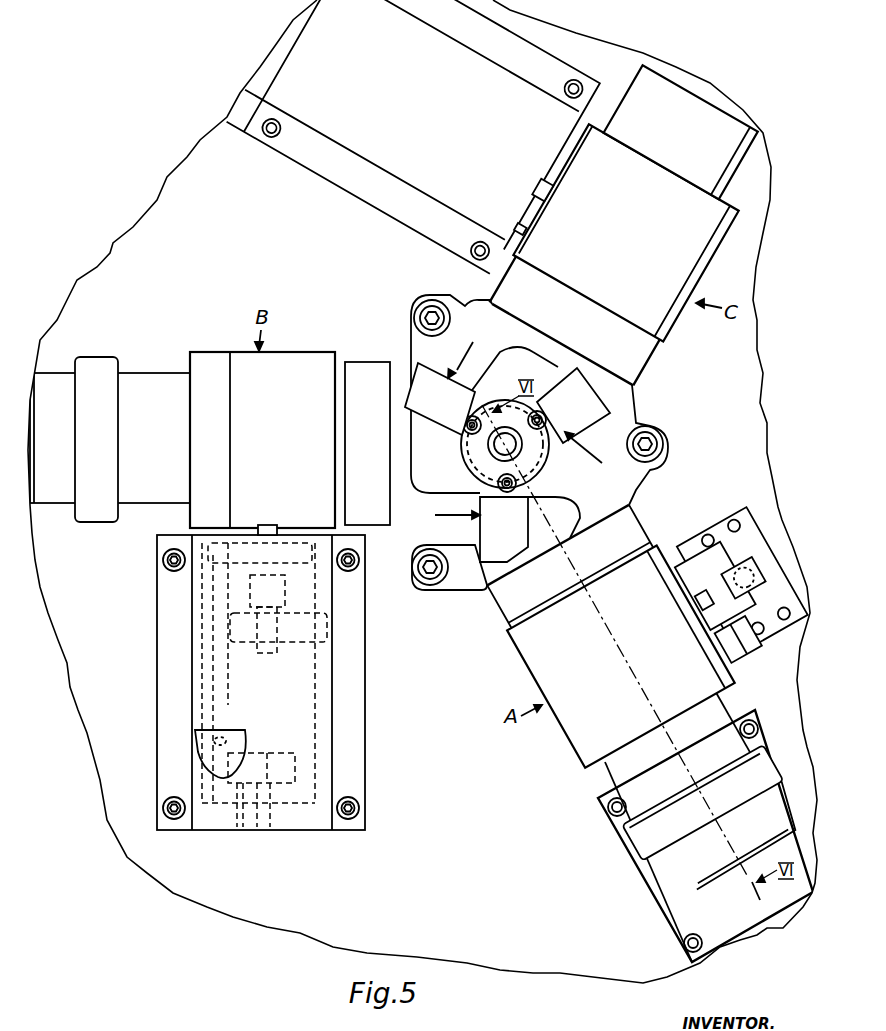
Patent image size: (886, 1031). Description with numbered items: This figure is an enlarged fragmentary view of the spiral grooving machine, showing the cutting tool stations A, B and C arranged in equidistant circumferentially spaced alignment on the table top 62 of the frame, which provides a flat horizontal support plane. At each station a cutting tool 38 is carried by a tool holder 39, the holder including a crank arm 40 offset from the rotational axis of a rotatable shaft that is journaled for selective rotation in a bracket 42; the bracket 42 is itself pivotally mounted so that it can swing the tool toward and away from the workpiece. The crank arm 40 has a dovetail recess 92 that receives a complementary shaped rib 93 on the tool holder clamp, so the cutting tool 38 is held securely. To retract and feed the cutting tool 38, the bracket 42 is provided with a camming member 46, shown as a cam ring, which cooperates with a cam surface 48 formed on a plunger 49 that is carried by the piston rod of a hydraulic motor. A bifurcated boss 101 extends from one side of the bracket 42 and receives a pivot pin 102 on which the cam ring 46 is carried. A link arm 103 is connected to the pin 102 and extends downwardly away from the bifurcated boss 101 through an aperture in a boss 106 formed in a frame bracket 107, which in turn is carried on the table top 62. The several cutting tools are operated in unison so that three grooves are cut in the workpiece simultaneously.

The cutting tool 38 is at (494, 450).
The tool holder 39 is at (475, 300).
The crank arm 40 is at (452, 346).
The bracket means 42 is at (294, 358).
The camming member 46 is at (266, 528).
The cam surface 48 is at (737, 563).
The plunger 49 is at (756, 588).
The table top 62 is at (268, 912).
The dovetail recess 92 is at (468, 508).
The rib 93 is at (455, 440).
The bifurcated boss 101 is at (690, 592).
The pivot pin 102 is at (741, 648).
The link arm 103 is at (233, 675).
The boss 106 is at (246, 737).
The frame bracket 107 is at (326, 716).